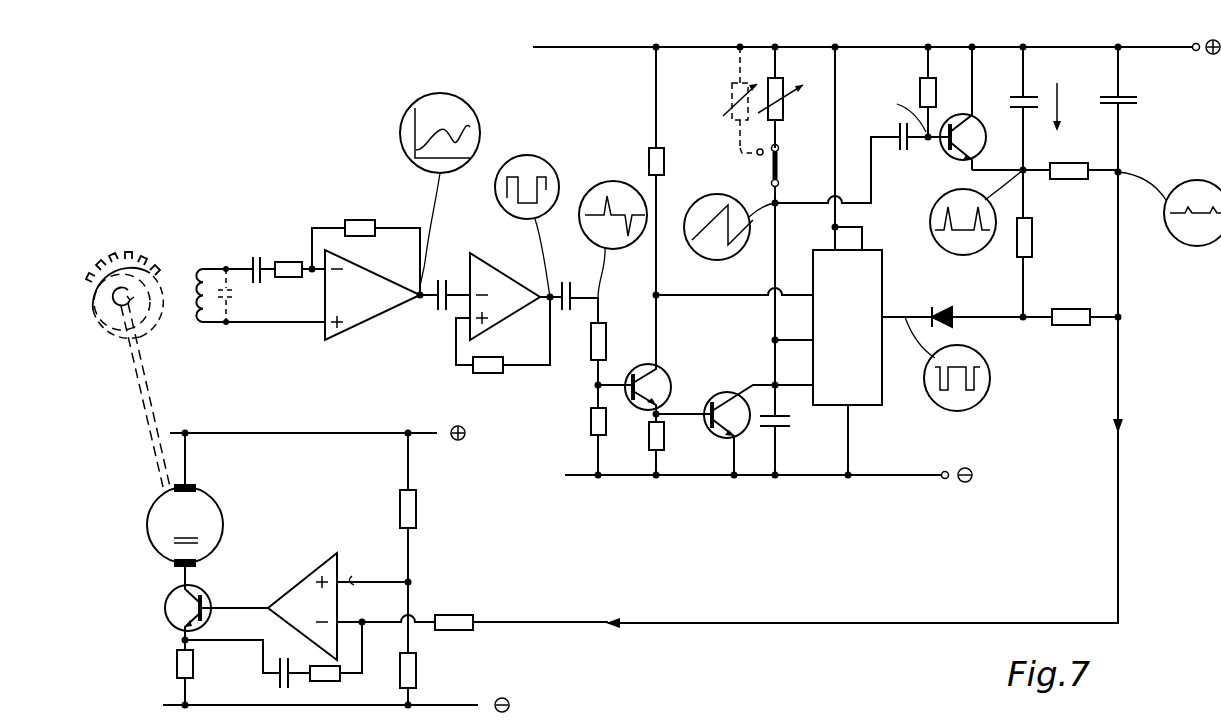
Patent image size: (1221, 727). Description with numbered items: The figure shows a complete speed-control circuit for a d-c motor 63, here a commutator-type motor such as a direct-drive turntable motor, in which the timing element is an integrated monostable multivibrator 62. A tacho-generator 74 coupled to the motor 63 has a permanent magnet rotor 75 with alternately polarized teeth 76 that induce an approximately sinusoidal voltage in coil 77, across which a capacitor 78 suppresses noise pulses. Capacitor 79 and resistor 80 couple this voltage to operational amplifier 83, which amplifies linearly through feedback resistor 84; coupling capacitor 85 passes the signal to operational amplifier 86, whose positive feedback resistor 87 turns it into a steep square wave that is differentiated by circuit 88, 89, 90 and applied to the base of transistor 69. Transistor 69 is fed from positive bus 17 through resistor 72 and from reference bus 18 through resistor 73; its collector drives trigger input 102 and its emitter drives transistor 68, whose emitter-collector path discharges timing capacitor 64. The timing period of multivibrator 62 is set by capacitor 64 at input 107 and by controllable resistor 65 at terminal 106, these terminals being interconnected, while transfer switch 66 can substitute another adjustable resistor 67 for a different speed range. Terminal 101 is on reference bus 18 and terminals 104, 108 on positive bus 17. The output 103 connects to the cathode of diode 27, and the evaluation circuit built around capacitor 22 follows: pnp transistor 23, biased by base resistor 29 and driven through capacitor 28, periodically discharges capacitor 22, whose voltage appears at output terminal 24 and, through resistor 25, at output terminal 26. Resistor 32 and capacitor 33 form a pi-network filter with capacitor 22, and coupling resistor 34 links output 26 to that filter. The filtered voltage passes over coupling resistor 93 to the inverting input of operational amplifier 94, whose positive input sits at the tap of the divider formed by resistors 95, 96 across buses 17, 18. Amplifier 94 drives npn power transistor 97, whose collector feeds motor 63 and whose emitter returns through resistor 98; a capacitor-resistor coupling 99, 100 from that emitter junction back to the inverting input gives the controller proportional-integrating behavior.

The positive bus 17 is at (866, 45).
The reference bus 18 is at (828, 477).
The capacitor 22 is at (1035, 93).
The pnp transistor 23 is at (950, 150).
The output terminal 24 is at (1023, 170).
The resistor 25 is at (1032, 246).
The output terminal 26 is at (1020, 322).
The diode 27 is at (958, 310).
The capacitor 28 is at (898, 128).
The resistor 29 is at (922, 85).
The resistor 32 is at (1068, 182).
The capacitor 33 is at (1138, 100).
The coupling resistor 34 is at (1070, 327).
The monostable multivibrator 62 is at (794, 263).
The d-c motor 63 is at (212, 522).
The capacitor 64 is at (792, 427).
The controllable resistor 65 is at (787, 112).
The transfer switch 66 is at (787, 167).
The resistor 67 is at (728, 100).
The npn transistor 68 is at (720, 395).
The npn transistor 69 is at (660, 348).
The resistor 72 is at (664, 163).
The resistor 73 is at (664, 437).
The tacho-generator 74 is at (215, 240).
The permanent magnet rotor 75 is at (108, 322).
The teeth 76 is at (100, 262).
The coil 77 is at (203, 322).
The capacitor 78 is at (234, 295).
The capacitor 79 is at (257, 255).
The resistor 80 is at (291, 262).
The operational amplifier 83 is at (362, 307).
The resistor 84 is at (363, 220).
The coupling capacitor 85 is at (437, 312).
The operational amplifier 86 is at (507, 287).
The positive feedback resistor 87 is at (490, 375).
The differentiating circuit capacitor 88 is at (572, 280).
The differentiating circuit resistor 89 is at (607, 341).
The differentiating circuit resistor 90 is at (607, 428).
The coupling resistor 93 is at (460, 616).
The operational amplifier 94 is at (305, 590).
The resistor 95 is at (418, 508).
The resistor 96 is at (416, 665).
The npn power transistor 97 is at (175, 610).
The resistor 98 is at (177, 661).
The capacitor 99 is at (278, 686).
The resistor 100 is at (328, 682).
The terminal 101 is at (854, 435).
The trigger input 102 is at (748, 296).
The output 103 is at (891, 320).
The terminal 104 is at (857, 247).
The terminal 106 is at (808, 342).
The input 107 is at (807, 387).
The terminal 108 is at (831, 157).